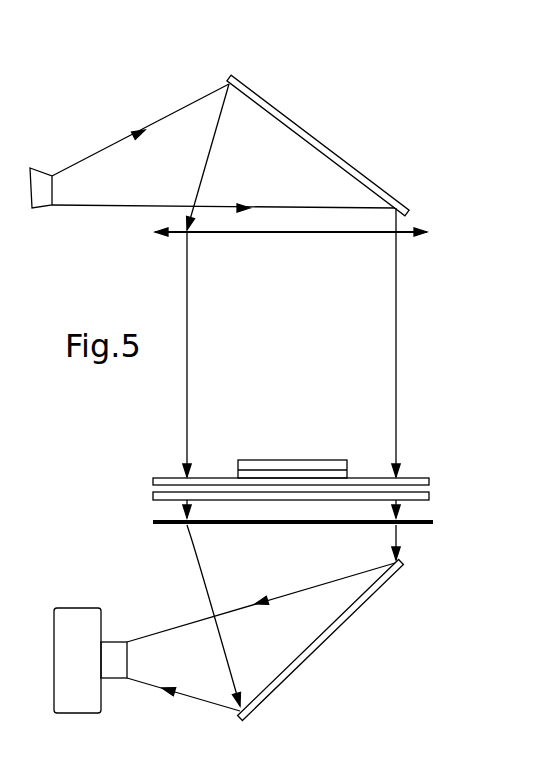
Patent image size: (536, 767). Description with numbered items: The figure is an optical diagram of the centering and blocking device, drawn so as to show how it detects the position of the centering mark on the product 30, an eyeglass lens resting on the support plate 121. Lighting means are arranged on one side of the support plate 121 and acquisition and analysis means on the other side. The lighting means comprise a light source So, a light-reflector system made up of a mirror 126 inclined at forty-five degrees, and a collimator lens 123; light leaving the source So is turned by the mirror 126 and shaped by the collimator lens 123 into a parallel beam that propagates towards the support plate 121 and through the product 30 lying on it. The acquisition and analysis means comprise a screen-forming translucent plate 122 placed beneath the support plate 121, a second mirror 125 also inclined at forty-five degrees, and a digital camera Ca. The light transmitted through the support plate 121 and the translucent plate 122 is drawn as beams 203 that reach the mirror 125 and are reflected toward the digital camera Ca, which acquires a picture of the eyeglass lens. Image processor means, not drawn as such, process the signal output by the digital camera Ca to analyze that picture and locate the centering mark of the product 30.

The light source So is at (42, 206).
The mirror 126 is at (300, 121).
The collimator lens 123 is at (265, 235).
The product 30 is at (317, 466).
The support plate 121 is at (412, 478).
The screen-forming translucent plate 122 is at (303, 525).
The light beams 203 is at (203, 552).
The mirror 125 is at (355, 608).
The digital camera Ca is at (75, 620).